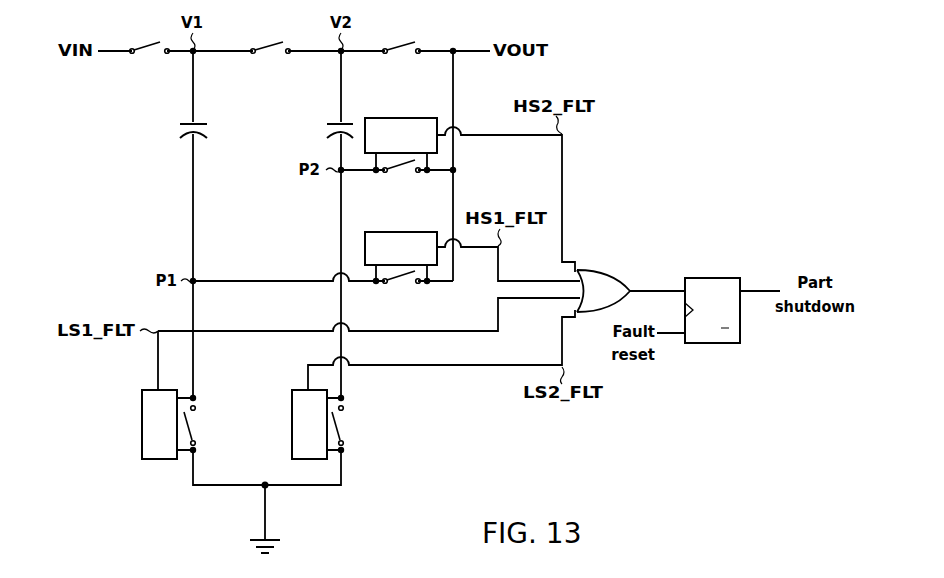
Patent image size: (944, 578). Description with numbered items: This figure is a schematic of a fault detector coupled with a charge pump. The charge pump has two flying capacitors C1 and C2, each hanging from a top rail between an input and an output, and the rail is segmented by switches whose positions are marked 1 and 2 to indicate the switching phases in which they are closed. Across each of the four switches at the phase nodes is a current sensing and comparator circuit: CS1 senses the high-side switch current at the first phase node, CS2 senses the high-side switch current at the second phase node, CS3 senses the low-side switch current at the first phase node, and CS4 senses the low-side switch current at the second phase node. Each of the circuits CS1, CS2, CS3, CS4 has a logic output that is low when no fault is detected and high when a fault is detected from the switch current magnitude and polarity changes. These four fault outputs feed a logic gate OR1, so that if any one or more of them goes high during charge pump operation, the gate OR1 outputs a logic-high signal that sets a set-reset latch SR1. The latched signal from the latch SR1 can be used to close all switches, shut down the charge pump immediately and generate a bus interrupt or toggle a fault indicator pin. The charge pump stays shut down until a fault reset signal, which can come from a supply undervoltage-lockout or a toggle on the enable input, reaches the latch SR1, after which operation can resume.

The switch position 1 is at (275, 243).
The switch position 2 is at (302, 243).
The capacitor C1 is at (181, 128).
The capacitor C2 is at (327, 128).
The current sensing and comparator circuit CS1 is at (401, 248).
The current sensing and comparator circuit CS2 is at (401, 135).
The current sensing and comparator circuit CS3 is at (159, 424).
The current sensing and comparator circuit CS4 is at (309, 424).
The logic gate OR1 is at (603, 291).
The set-reset latch SR1 is at (712, 310).